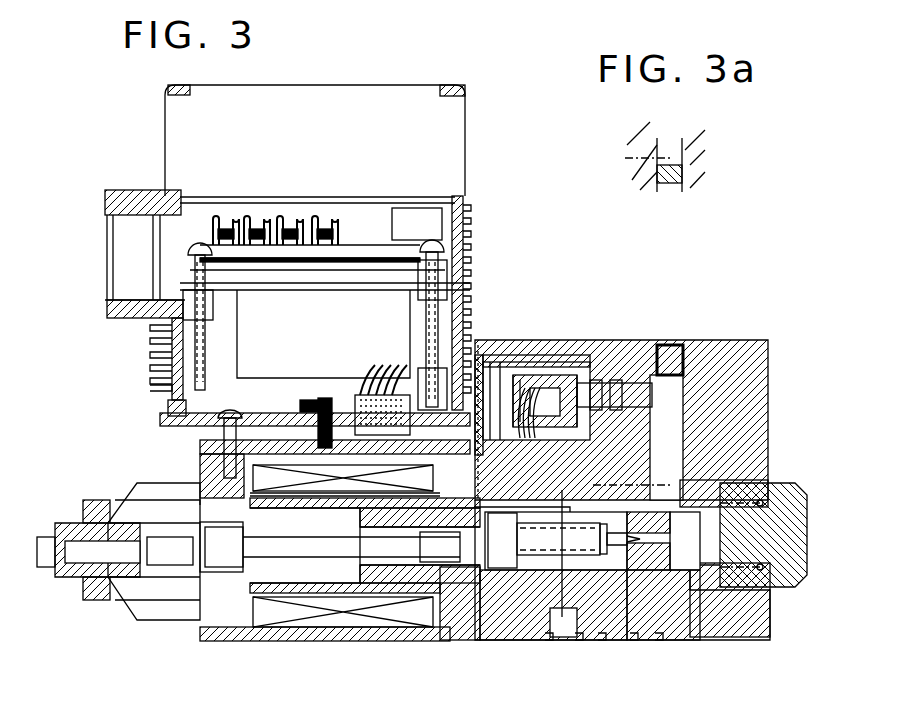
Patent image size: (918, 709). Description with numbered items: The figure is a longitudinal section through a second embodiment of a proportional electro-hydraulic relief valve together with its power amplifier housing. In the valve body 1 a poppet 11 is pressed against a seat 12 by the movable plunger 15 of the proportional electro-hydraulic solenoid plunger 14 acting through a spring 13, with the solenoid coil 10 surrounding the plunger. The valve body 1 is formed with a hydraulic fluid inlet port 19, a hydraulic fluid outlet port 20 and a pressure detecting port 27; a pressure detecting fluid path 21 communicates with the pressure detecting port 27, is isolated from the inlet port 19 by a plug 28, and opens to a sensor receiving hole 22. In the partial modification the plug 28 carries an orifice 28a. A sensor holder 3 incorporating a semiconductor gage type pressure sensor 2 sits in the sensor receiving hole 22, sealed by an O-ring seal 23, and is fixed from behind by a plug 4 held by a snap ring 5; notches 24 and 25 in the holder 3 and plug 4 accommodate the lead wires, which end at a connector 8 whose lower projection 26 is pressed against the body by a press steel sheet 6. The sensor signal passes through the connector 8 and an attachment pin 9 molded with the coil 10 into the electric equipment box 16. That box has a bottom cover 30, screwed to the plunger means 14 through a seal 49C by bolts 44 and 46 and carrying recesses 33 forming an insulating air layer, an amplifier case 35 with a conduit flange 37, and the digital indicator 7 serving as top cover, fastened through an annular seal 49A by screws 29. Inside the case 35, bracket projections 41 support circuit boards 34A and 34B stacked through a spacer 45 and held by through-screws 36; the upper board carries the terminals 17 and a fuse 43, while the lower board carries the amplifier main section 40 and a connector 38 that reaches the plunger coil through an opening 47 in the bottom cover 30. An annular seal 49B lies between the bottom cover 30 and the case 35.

In FIG. 3, the valve body 1 is at (760, 368).
In FIG. 3, the semiconductor gage type pressure sensor 2 is at (565, 372).
In FIG. 3, the sensor holder 3 is at (530, 372).
In FIG. 3, the plug 4 is at (492, 362).
In FIG. 3, the snap ring 5 is at (482, 345).
In FIG. 3, the press steel sheet 6 is at (478, 355).
In FIG. 3, the digital indicator 7 is at (358, 100).
In FIG. 3, the connector 8 is at (520, 465).
In FIG. 3, the attachment pin 9 is at (505, 480).
In FIG. 3, the solenoid coil 10 is at (255, 640).
In FIG. 3, the poppet 11 is at (620, 545).
In FIG. 3, the seat 12 is at (650, 572).
In FIG. 3, the spring 13 is at (535, 560).
In FIG. 3, the proportional electro-hydraulic solenoid plunger 14 is at (325, 630).
In FIG. 3, the movable plunger 15 is at (462, 570).
In FIG. 3, the electric equipment box 16 is at (150, 354).
In FIG. 3, the terminals 17 is at (326, 216).
In FIG. 3, the hydraulic fluid inlet port 19 is at (685, 620).
In FIG. 3, the hydraulic fluid outlet port 20 is at (640, 545).
In FIG. 3, the pressure detecting fluid path 21 is at (640, 370).
In FIG. 3, the sensor receiving hole 22 is at (598, 375).
In FIG. 3, the seal 23 is at (616, 375).
In FIG. 3, the notch 24 is at (505, 355).
In FIG. 3, the notch 25 is at (580, 432).
In FIG. 3, the lower projection 26 is at (495, 600).
In FIG. 3, the pressure detecting port 27 is at (565, 640).
In FIG. 3, the plug 28 is at (690, 475).
In FIG. 3a, the plug 28 is at (700, 140).
In FIG. 3a, the orifice 28a is at (690, 178).
In FIG. 3, the screws 29 is at (170, 90).
In FIG. 3, the bottom cover 30 is at (160, 420).
In FIG. 3, the recesses 33 is at (200, 445).
In FIG. 3, the circuit board 34A is at (400, 250).
In FIG. 3, the circuit board 34B is at (400, 270).
In FIG. 3, the amplifier case 35 is at (150, 388).
In FIG. 3, the through-screws 36 is at (150, 318).
In FIG. 3, the flange 37 is at (105, 202).
In FIG. 3, the connector 38 is at (385, 365).
In FIG. 3, the amplifier main section 40 is at (323, 334).
In FIG. 3, the bracket projections 41 is at (190, 270).
In FIG. 3, the fuse 43 is at (432, 215).
In FIG. 3, the bolts 44 is at (232, 412).
In FIG. 3, the spacer 45 is at (440, 262).
In FIG. 3, the bolts 46 is at (305, 400).
In FIG. 3, the opening 47 is at (340, 395).
In FIG. 3, the annular seal 49A is at (466, 200).
In FIG. 3, the annular seal 49B is at (168, 408).
In FIG. 3, the seal 49C is at (200, 472).